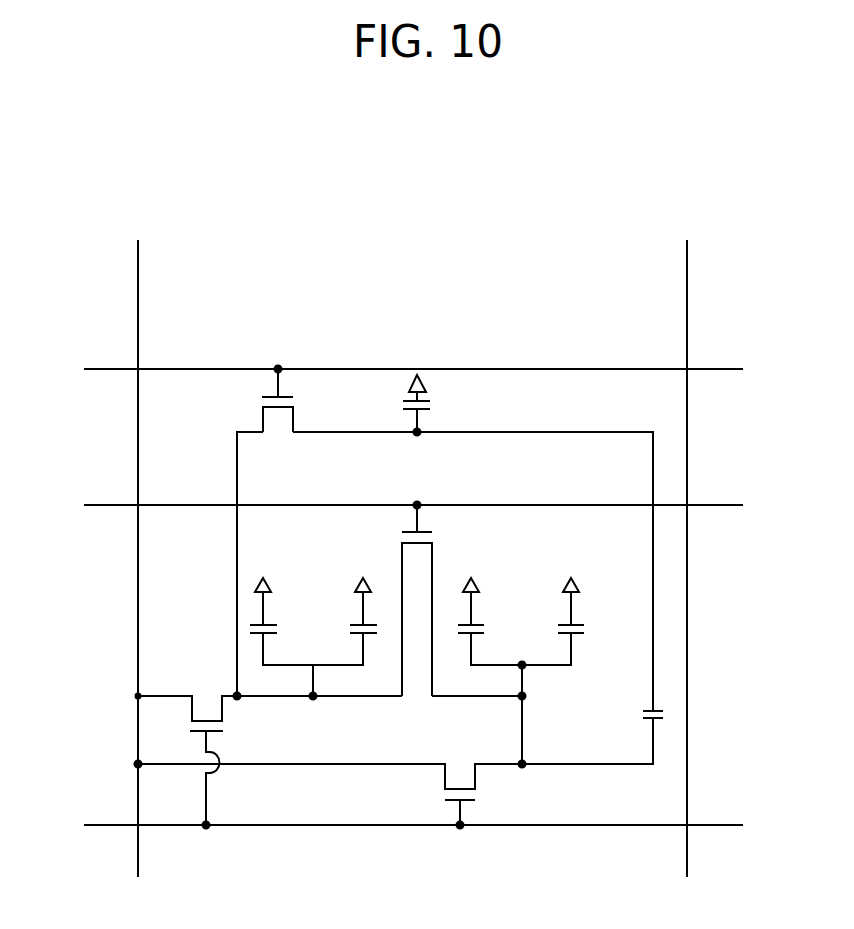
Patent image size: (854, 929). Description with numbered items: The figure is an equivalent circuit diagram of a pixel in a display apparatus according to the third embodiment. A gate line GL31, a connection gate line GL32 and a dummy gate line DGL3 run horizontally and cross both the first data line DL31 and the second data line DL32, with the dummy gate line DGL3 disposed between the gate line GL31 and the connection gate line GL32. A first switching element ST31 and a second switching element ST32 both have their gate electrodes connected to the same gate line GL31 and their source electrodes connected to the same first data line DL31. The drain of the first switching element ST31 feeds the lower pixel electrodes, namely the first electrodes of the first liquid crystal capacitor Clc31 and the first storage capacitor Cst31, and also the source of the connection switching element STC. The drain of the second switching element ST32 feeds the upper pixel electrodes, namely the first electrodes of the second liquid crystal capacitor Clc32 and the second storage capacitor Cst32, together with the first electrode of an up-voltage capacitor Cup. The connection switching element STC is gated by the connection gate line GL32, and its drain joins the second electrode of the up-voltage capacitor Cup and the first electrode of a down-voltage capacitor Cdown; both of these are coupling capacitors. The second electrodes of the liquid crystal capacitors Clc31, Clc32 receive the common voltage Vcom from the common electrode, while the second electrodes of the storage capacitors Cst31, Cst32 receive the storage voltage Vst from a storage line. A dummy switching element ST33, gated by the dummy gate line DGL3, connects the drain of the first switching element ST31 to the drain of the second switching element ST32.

The first data line DL31 is at (138, 545).
The second data line DL32 is at (686, 545).
The gate line GL31 is at (389, 825).
The connection gate line GL32 is at (389, 369).
The dummy gate line DGL3 is at (382, 505).
The connection switching element STC is at (299, 380).
The down-voltage capacitor Cdown is at (450, 405).
The dummy switching element ST33 is at (439, 520).
The first switching element ST31 is at (236, 745).
The second switching element ST32 is at (490, 812).
The first liquid crystal capacitor Clc31 is at (288, 621).
The first storage capacitor Cst31 is at (338, 639).
The second liquid crystal capacitor Clc32 is at (503, 621).
The second storage capacitor Cst32 is at (583, 637).
The up-voltage capacitor Cup is at (628, 714).
The common voltage Vcom is at (371, 565).
The storage voltage Vst is at (467, 565).